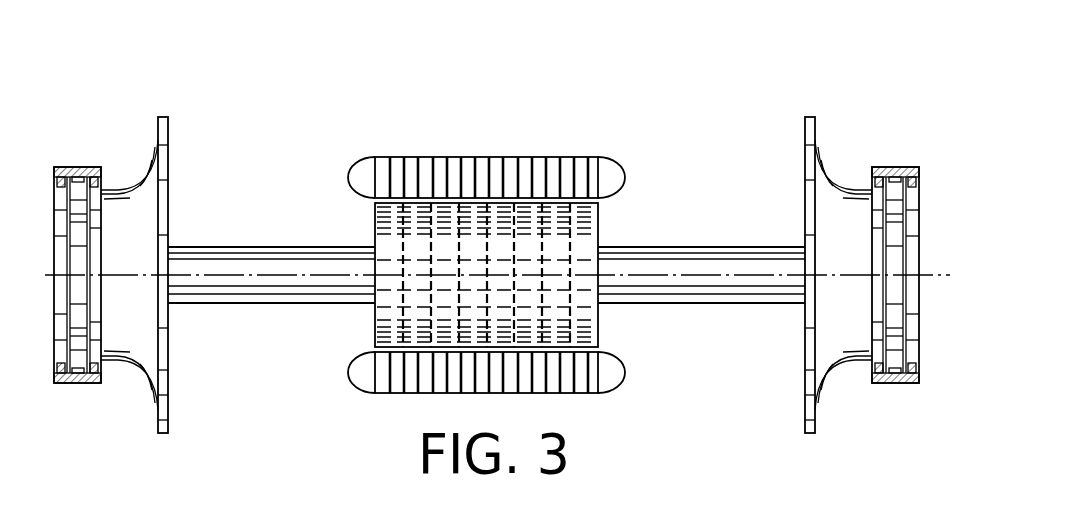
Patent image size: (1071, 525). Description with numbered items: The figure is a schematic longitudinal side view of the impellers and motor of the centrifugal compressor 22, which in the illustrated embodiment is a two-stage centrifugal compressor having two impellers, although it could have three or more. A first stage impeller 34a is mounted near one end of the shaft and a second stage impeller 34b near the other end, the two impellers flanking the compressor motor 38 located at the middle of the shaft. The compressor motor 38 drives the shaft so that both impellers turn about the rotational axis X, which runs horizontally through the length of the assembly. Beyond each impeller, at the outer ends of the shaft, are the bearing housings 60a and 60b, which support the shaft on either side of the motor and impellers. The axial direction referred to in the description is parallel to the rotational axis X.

The compressor 22 is at (600, 108).
The compressor motor 38 is at (496, 152).
The first stage impeller 34a is at (810, 116).
The second stage impeller 34b is at (162, 116).
The bearing housing 60a is at (893, 164).
The bearing housing 60b is at (80, 164).
The rotational axis X is at (938, 273).